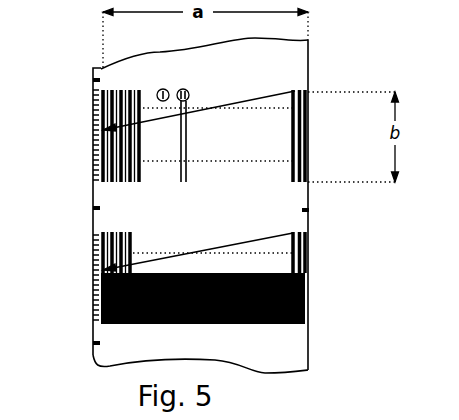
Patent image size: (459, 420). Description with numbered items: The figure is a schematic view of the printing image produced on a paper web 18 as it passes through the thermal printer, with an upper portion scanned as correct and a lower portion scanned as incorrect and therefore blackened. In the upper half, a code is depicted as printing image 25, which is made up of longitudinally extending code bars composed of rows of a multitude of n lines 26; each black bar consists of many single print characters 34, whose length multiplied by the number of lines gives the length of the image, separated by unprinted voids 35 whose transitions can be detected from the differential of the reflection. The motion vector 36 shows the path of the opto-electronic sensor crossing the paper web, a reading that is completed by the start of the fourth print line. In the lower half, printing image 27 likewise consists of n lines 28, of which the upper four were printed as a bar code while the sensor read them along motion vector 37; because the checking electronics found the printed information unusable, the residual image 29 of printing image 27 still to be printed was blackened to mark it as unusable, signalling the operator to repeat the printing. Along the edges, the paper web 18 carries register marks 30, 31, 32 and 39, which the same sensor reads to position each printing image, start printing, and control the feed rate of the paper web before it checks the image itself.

The paper web 18 is at (304, 68).
The printing image 25 is at (318, 134).
The lines 26 is at (86, 90).
The printing image 27 is at (318, 273).
The lines 28 is at (86, 232).
The residual image 29 is at (222, 327).
The register mark 30 is at (92, 80).
The register mark 31 is at (92, 208).
The register mark 32 is at (92, 343).
The print character 34 is at (163, 89).
The unprinted void 35 is at (186, 89).
The motion vector 36 is at (208, 110).
The motion vector 37 is at (230, 243).
The register mark 39 is at (309, 210).